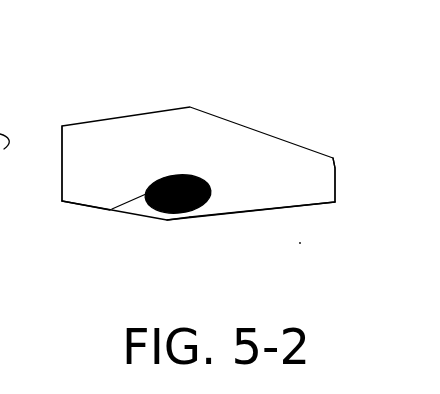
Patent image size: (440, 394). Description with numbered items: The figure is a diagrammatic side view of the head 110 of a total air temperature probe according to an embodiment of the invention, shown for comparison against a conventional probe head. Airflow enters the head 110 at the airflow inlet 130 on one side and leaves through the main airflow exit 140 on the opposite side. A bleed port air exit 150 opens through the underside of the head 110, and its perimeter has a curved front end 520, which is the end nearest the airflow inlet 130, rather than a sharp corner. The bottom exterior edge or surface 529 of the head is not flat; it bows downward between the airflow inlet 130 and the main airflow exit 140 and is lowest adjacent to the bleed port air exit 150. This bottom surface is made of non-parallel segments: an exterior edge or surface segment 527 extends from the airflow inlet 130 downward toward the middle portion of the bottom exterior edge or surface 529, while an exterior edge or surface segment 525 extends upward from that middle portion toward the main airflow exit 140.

The head 110 is at (248, 100).
The airflow inlet 130 is at (62, 143).
The main airflow exit 140 is at (333, 158).
The bleed port air exit 150 is at (172, 160).
The curved front end 520 is at (115, 208).
The exterior edge or surface segment 525 is at (272, 210).
The exterior edge or surface segment 527 is at (63, 204).
The bottom exterior edge or surface 529 is at (190, 215).